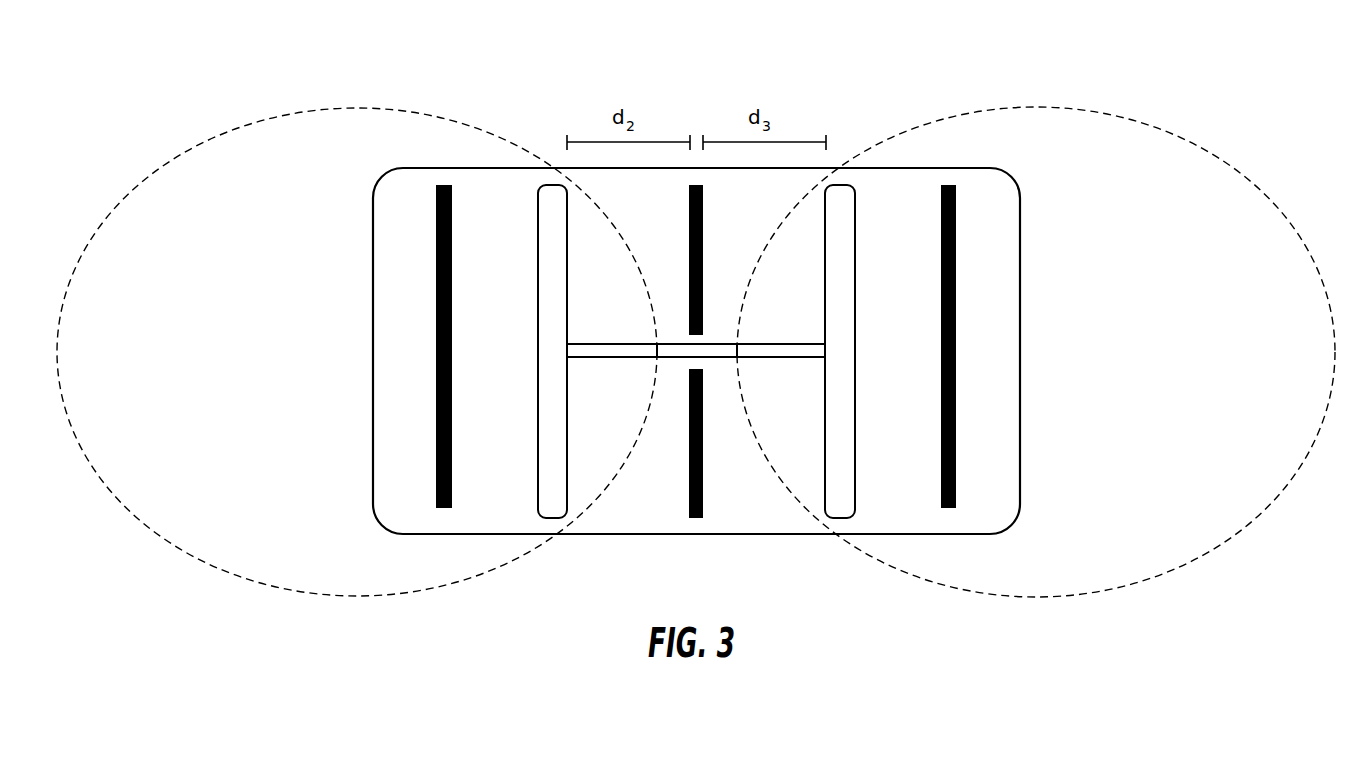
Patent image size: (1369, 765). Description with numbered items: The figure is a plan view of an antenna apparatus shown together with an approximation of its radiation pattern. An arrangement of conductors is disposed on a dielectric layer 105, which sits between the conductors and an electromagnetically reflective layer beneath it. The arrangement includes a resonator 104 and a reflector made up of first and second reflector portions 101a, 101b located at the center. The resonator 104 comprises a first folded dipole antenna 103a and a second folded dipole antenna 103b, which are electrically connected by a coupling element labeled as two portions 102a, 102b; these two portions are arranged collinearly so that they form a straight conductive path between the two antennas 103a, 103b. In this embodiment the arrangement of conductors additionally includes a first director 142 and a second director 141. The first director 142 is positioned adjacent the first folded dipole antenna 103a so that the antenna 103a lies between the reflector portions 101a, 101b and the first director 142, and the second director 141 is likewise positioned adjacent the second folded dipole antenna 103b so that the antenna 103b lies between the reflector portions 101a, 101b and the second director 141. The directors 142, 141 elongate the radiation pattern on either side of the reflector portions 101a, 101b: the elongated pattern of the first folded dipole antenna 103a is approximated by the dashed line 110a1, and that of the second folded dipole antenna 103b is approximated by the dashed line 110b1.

The dashed line approximating elongated radiation pattern 110a1 is at (226, 136).
The dashed line approximating elongated radiation pattern 110b1 is at (1167, 139).
The dielectric layer 105 is at (1020, 272).
The first director element 142 is at (437, 436).
The second director element 141 is at (956, 436).
The first reflector portion 101a is at (705, 210).
The second reflector portion 101b is at (704, 508).
The coupling element portion 102a is at (638, 353).
The coupling element portion 102b is at (752, 353).
The first folded dipole antenna 103a is at (567, 417).
The second folded dipole antenna 103b is at (856, 362).
The resonator 104 is at (872, 236).